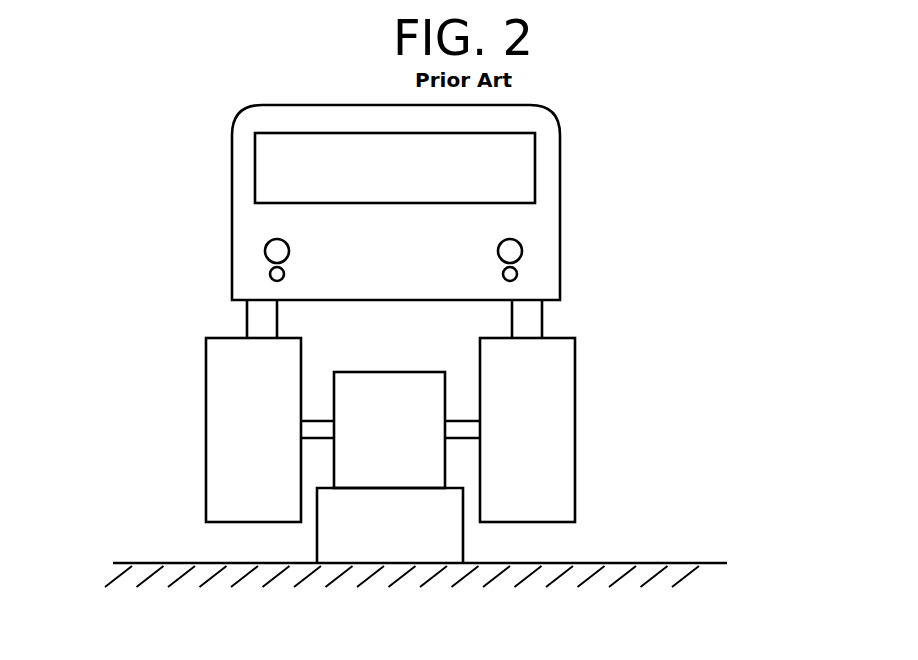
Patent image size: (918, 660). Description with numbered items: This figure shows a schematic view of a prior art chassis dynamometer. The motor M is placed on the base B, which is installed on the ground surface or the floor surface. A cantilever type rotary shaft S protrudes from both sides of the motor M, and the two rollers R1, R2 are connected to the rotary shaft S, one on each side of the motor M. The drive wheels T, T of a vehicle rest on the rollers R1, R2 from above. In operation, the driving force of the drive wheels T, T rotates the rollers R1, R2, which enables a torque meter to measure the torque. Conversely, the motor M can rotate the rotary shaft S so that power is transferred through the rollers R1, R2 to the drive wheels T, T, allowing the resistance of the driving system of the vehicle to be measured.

The drive wheel T is at (277, 316).
The roller R1 is at (206, 400).
The roller R2 is at (575, 391).
The cantilever type rotary shaft S is at (320, 421).
The motor M is at (388, 372).
The base B is at (463, 540).